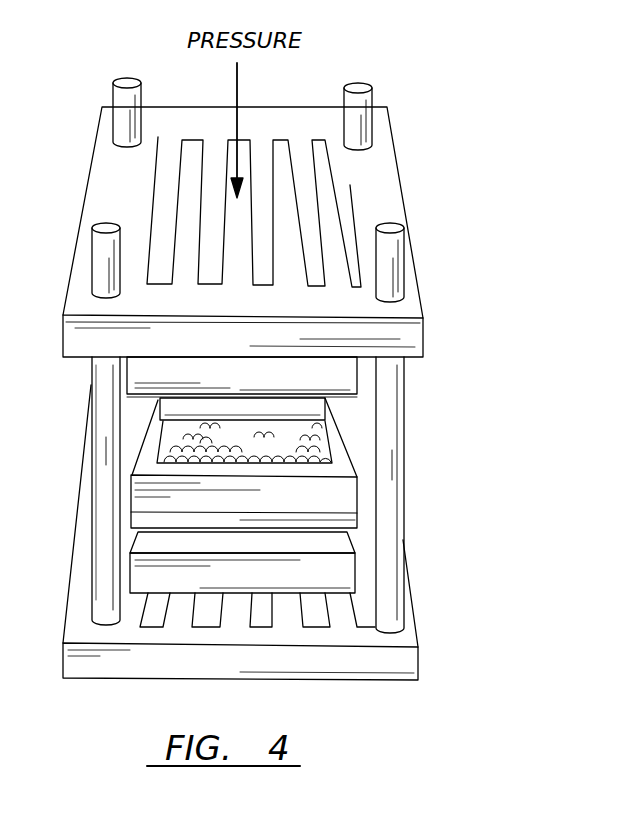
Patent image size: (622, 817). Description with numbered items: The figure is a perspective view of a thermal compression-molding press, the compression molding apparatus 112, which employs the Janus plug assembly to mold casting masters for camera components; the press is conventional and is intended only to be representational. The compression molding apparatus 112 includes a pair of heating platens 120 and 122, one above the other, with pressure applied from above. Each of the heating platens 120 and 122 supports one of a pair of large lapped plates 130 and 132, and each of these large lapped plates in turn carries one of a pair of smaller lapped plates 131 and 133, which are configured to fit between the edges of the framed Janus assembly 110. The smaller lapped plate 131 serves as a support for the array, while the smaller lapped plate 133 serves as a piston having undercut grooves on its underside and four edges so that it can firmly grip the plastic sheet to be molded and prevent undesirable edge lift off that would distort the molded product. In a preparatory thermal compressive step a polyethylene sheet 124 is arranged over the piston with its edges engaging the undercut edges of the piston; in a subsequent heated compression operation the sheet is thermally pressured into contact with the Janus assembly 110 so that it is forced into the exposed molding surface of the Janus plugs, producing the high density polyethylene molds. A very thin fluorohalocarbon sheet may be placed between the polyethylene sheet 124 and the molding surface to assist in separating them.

The compression molding apparatus 112 is at (416, 167).
The heating platen 120 is at (408, 285).
The heating platen 122 is at (355, 660).
The large lapped plate 130 is at (340, 378).
The smaller lapped plate 133 is at (170, 409).
The polyethylene sheet 124 is at (312, 427).
The Janus assembly 110 is at (313, 450).
The smaller lapped plate 131 is at (347, 518).
The large lapped plate 132 is at (335, 573).